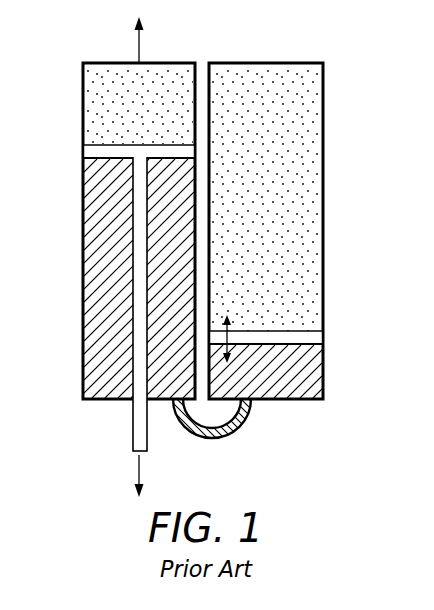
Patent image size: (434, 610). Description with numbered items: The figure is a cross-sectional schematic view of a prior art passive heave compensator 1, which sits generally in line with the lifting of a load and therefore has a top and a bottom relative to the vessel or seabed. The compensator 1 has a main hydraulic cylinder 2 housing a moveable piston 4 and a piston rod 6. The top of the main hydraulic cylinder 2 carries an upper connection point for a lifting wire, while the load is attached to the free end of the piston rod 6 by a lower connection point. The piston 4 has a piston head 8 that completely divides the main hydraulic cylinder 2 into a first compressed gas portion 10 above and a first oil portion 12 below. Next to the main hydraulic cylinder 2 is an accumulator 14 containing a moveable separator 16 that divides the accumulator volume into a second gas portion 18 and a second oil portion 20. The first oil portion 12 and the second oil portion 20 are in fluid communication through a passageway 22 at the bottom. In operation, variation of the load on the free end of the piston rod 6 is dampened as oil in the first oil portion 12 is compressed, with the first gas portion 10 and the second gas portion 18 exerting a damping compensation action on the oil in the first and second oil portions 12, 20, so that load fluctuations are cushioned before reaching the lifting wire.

The passive heave compensator 1 is at (69, 40).
The main hydraulic cylinder 2 is at (83, 114).
The piston 4 is at (138, 304).
The piston rod 6 is at (132, 435).
The piston head 8 is at (92, 150).
The first compressed gas portion 10 is at (93, 80).
The first oil portion 12 is at (92, 213).
The accumulator 14 is at (324, 176).
The moveable separator 16 is at (331, 336).
The second gas portion 18 is at (313, 109).
The second oil portion 20 is at (335, 368).
The passageway 22 is at (219, 437).